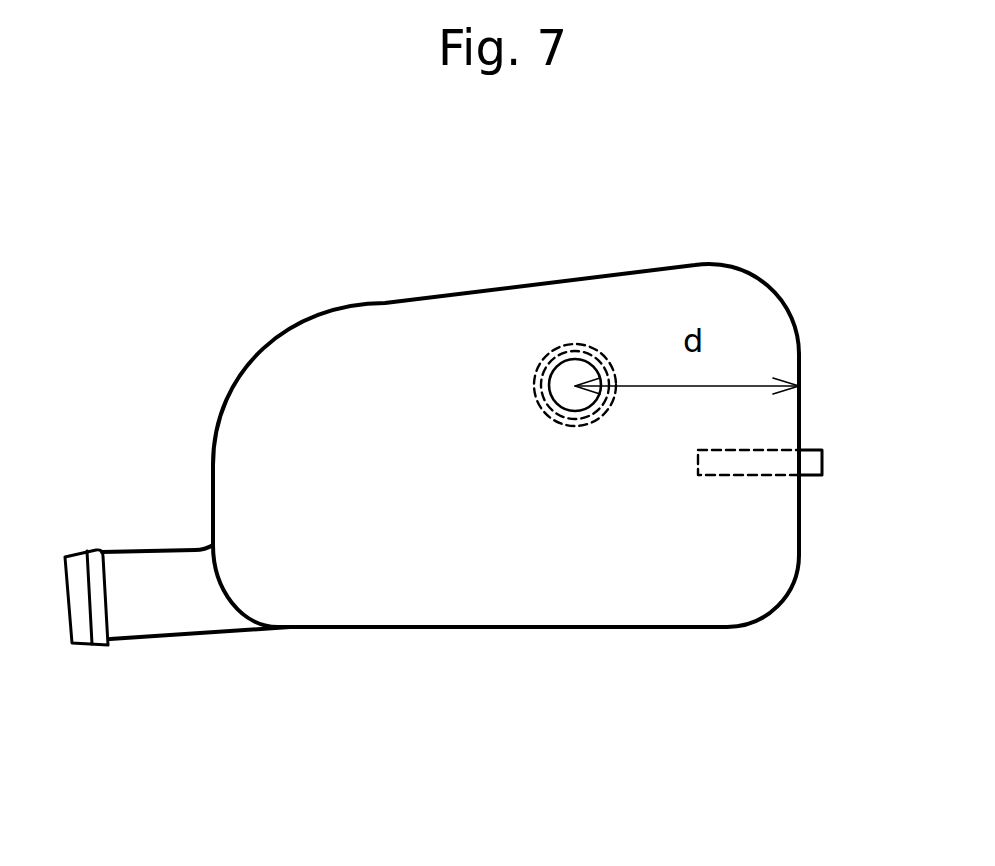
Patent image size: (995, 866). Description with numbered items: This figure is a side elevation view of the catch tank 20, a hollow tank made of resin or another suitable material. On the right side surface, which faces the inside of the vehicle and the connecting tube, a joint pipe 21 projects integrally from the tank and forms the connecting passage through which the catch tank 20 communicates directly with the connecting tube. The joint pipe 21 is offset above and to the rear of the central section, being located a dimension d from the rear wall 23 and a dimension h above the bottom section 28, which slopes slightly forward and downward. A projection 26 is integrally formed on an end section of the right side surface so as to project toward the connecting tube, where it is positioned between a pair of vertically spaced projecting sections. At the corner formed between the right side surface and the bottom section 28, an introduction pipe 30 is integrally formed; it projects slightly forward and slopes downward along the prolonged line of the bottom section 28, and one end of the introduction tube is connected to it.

The catch tank 20 is at (293, 302).
The joint pipe 21 is at (577, 358).
The rear wall 23 is at (799, 348).
The projection 26 is at (822, 474).
The bottom section 28 is at (500, 630).
The introduction pipe 30 is at (177, 635).